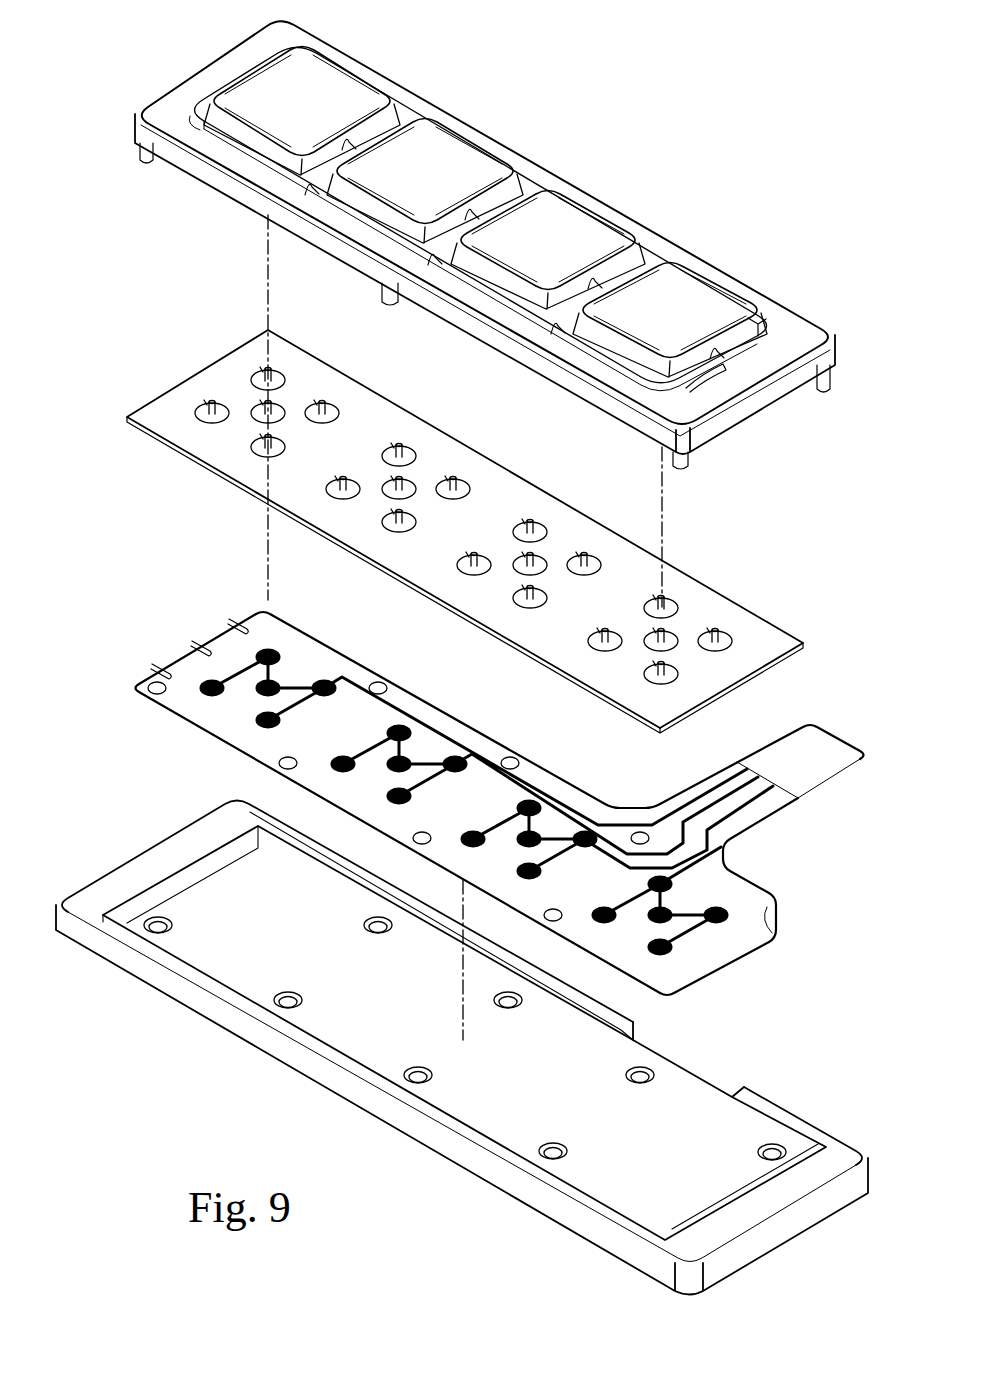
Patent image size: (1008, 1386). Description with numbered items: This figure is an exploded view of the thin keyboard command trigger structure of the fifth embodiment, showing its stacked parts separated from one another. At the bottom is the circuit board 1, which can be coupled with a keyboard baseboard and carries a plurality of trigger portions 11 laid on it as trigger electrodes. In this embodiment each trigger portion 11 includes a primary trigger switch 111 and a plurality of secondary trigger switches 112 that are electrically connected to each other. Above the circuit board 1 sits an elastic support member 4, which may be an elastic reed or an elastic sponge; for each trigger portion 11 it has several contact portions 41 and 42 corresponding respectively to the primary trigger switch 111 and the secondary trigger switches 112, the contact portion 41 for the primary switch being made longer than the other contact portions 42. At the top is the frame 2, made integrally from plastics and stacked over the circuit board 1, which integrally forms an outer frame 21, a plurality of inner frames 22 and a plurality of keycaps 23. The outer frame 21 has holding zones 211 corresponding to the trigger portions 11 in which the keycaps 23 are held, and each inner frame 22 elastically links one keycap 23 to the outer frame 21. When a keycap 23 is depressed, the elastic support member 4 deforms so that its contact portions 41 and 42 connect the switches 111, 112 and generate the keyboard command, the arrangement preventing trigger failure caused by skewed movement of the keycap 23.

The circuit board 1 is at (200, 735).
The trigger portion 11 is at (440, 758).
The primary trigger switch 111 is at (258, 684).
The secondary trigger switch 112 is at (173, 656).
The frame 2 is at (485, 244).
The outer frame 21 is at (560, 170).
The holding zone 211 is at (767, 312).
The inner frame 22 is at (708, 382).
The keycap 23 is at (355, 95).
The elastic support member 4 is at (458, 531).
The contact portion 41 is at (262, 409).
The contact portion 42 is at (328, 405).